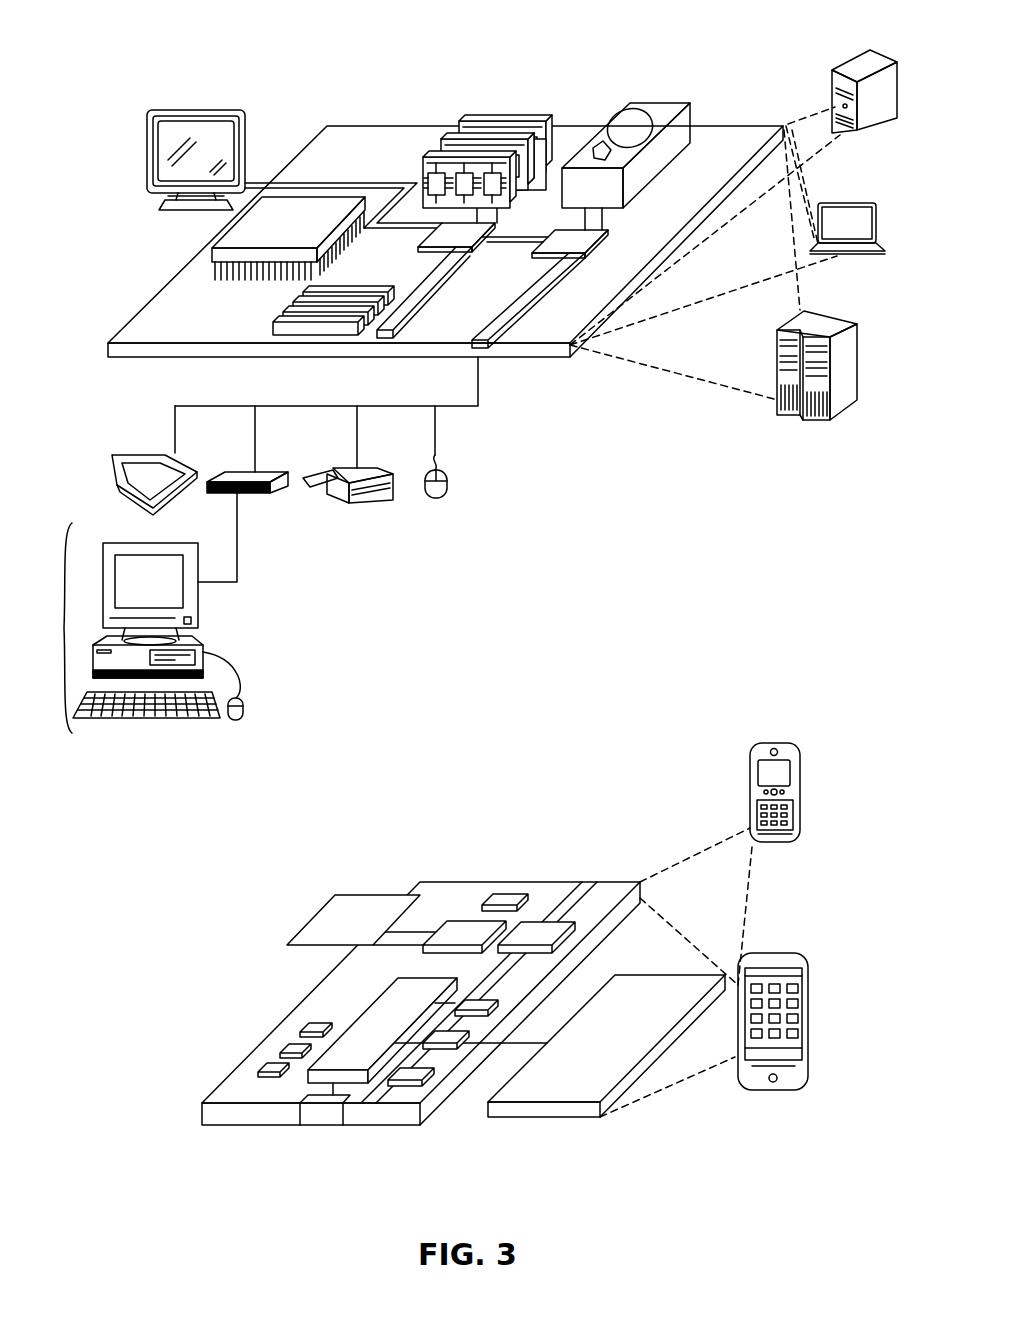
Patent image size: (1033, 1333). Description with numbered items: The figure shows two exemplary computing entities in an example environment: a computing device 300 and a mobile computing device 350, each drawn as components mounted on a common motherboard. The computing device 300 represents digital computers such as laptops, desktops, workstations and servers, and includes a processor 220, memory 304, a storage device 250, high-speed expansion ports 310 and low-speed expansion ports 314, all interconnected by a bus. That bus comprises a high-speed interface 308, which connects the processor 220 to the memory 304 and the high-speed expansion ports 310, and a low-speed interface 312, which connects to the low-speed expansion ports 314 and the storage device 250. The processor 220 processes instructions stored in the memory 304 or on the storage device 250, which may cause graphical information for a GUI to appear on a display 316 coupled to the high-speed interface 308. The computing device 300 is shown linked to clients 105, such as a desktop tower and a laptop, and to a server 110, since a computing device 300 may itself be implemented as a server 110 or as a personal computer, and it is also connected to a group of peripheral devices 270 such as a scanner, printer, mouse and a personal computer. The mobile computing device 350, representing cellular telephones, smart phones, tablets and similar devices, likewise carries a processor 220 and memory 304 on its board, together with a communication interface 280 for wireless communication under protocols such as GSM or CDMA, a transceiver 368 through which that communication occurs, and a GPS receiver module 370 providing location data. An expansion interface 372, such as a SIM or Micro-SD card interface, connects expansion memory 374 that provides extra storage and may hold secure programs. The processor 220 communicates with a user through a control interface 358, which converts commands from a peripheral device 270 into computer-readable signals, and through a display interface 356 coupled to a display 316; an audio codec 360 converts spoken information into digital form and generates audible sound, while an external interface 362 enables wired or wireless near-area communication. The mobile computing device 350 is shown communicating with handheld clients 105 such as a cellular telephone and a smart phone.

The computing device 300 is at (168, 40).
The display 316 is at (207, 108).
The processor 220 is at (242, 245).
The high-speed expansion ports 310 is at (273, 330).
The high-speed interface 308 is at (432, 246).
The low-speed expansion ports 314 is at (487, 330).
The memory 304 is at (497, 121).
The storage device 250 is at (657, 108).
The low-speed interface 312 is at (600, 232).
The clients 105 is at (873, 62).
The server 110 is at (830, 327).
The peripheral device 270 is at (127, 628).
The expansion interface 372 is at (424, 882).
The communication interface 280 is at (470, 935).
The GPS receiver module 370 is at (508, 895).
The transceiver 368 is at (530, 935).
The expansion memory 374 is at (325, 918).
The audio codec 360 is at (478, 1000).
The control interface 358 is at (443, 1038).
The display interface 356 is at (410, 1080).
The external interface 362 is at (317, 1118).
The mobile computing device 350 is at (207, 1137).